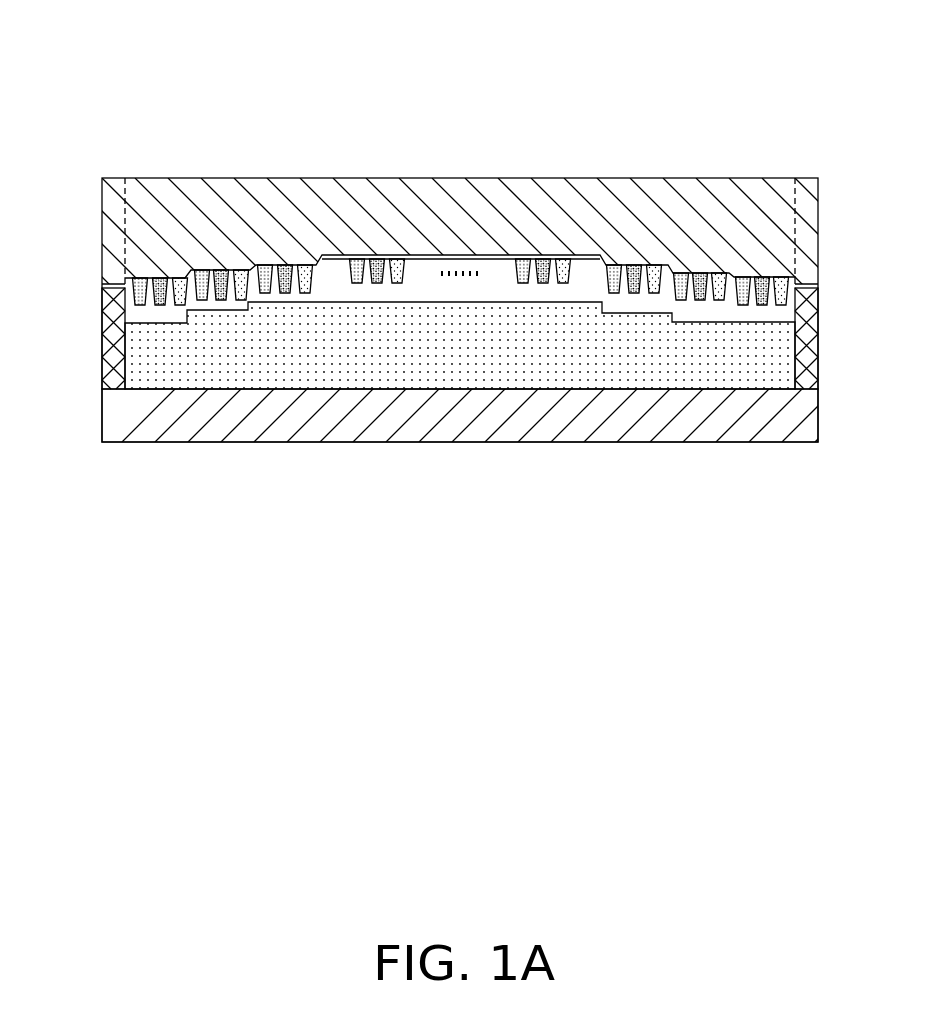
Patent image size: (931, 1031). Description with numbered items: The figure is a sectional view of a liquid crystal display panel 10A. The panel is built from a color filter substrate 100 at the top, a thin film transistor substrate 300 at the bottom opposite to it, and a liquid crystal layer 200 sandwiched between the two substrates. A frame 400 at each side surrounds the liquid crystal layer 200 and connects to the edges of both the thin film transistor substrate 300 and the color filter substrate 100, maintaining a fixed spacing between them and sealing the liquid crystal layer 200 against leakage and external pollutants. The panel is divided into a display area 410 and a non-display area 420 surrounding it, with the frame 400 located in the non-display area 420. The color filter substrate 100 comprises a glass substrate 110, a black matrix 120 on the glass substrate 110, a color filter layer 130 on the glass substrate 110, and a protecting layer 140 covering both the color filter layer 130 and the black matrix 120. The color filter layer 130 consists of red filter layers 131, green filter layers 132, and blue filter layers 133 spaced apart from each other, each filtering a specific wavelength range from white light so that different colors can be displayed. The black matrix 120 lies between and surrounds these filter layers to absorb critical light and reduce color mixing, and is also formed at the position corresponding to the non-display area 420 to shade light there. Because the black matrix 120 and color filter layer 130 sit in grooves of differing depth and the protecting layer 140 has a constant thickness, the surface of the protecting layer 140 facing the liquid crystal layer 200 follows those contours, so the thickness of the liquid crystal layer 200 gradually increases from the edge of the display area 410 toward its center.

The liquid crystal display panel 10A is at (467, 36).
The color filter substrate 100 is at (584, 137).
The glass substrate 110 is at (237, 195).
The black matrix 120 is at (462, 262).
The color filter layer 130 is at (471, 216).
The red filter layers 131 is at (680, 272).
The green filter layers 132 is at (698, 272).
The blue filter layers 133 is at (720, 272).
The protecting layer 140 is at (498, 268).
The liquid crystal layer 200 is at (340, 380).
The thin film transistor substrate 300 is at (422, 415).
The frame 400 is at (818, 323).
The display area 410 is at (146, 177).
The non-display area 420 is at (111, 177).